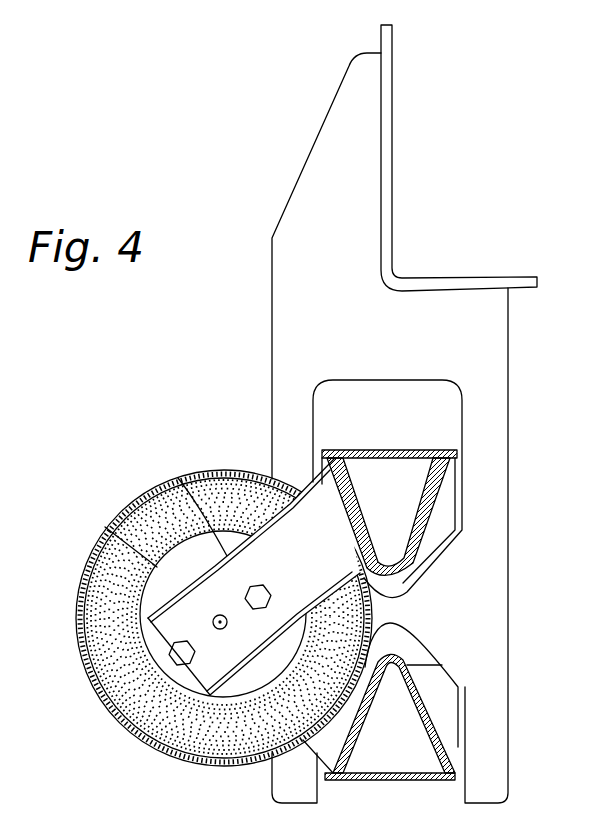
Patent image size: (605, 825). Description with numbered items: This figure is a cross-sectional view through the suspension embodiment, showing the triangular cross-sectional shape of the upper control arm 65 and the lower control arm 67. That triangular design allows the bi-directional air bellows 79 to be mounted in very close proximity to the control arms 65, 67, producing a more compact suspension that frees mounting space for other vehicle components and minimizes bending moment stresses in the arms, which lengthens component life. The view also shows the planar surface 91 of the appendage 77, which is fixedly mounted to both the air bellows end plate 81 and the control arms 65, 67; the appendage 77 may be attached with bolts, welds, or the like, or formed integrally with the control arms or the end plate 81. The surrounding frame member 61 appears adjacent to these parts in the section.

The frame member 61 is at (327, 163).
The upper control arm 65 is at (443, 473).
The lower control arm 67 is at (417, 779).
The appendage 77 is at (179, 478).
The bi-directional air bellows 79 is at (137, 713).
The air bellows end plate 81 is at (105, 527).
The planar surface 91 is at (297, 537).